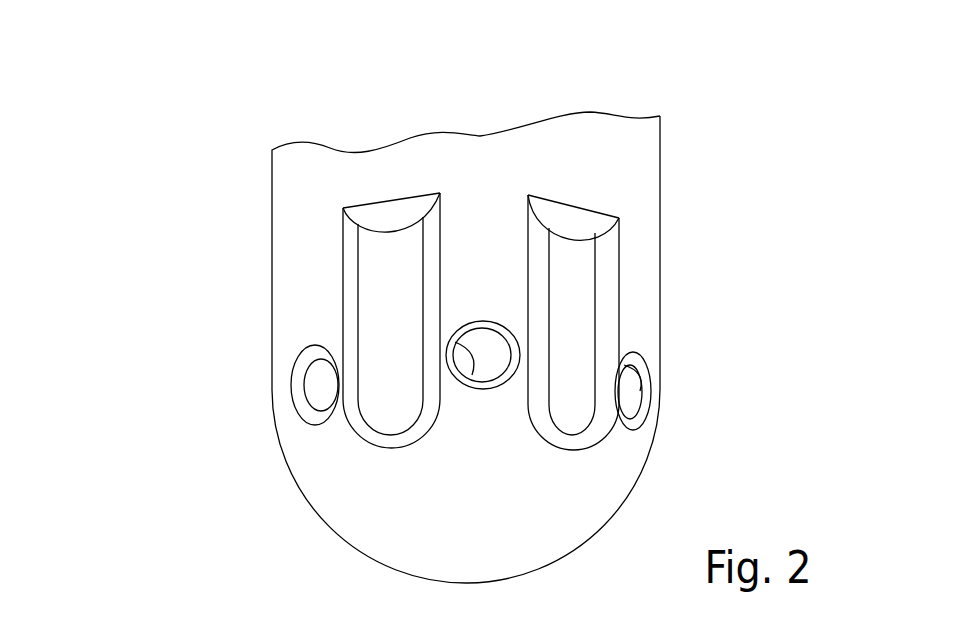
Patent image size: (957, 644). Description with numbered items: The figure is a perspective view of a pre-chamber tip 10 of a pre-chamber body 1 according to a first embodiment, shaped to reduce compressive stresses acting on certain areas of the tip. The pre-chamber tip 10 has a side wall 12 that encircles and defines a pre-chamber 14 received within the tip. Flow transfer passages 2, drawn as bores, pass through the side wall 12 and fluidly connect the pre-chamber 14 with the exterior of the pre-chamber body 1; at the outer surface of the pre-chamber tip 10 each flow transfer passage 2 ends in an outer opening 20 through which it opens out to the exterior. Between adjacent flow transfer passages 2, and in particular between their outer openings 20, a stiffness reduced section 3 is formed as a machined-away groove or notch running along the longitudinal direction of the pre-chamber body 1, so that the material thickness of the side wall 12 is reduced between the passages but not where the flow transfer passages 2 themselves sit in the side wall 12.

The pre-chamber body 1 is at (422, 316).
The pre-chamber tip 10 is at (533, 347).
The side wall 12 is at (637, 233).
The stiffness reduced section 3 is at (580, 317).
The flow transfer passage 2 is at (617, 373).
The outer opening 20 is at (482, 372).
The pre-chamber 14 is at (463, 363).